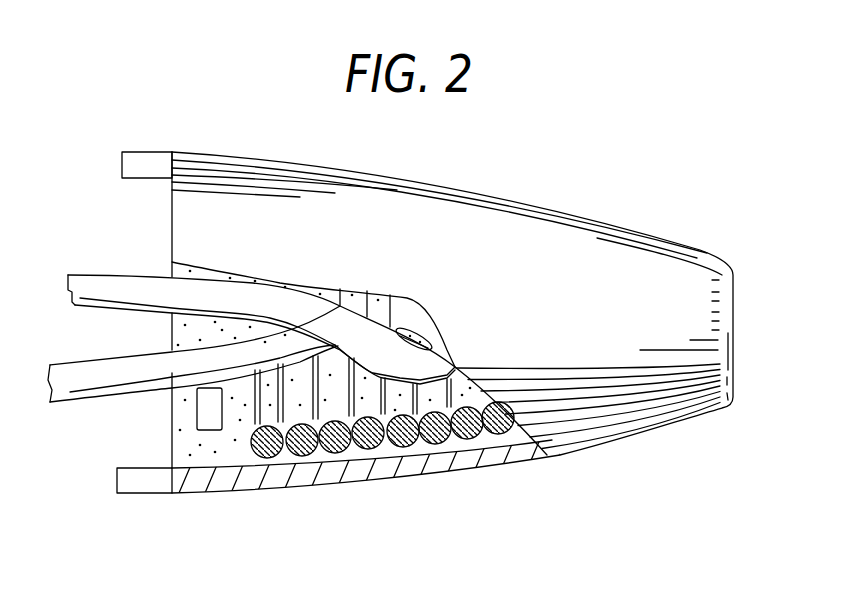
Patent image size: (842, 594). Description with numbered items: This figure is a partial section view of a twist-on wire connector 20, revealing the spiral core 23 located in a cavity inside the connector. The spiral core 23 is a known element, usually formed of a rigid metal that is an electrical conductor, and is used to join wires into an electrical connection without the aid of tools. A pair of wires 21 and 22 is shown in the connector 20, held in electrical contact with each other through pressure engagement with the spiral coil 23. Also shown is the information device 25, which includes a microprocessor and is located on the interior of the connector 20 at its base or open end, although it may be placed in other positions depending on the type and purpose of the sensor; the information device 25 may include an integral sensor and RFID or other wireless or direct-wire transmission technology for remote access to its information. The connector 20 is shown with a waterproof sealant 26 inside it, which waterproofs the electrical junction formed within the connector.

The twist-on wire connector 20 is at (636, 195).
The wire 21 is at (118, 278).
The wire 22 is at (122, 387).
The spiral core 23 is at (392, 437).
The information device 25 is at (210, 415).
The waterproof sealant 26 is at (327, 463).